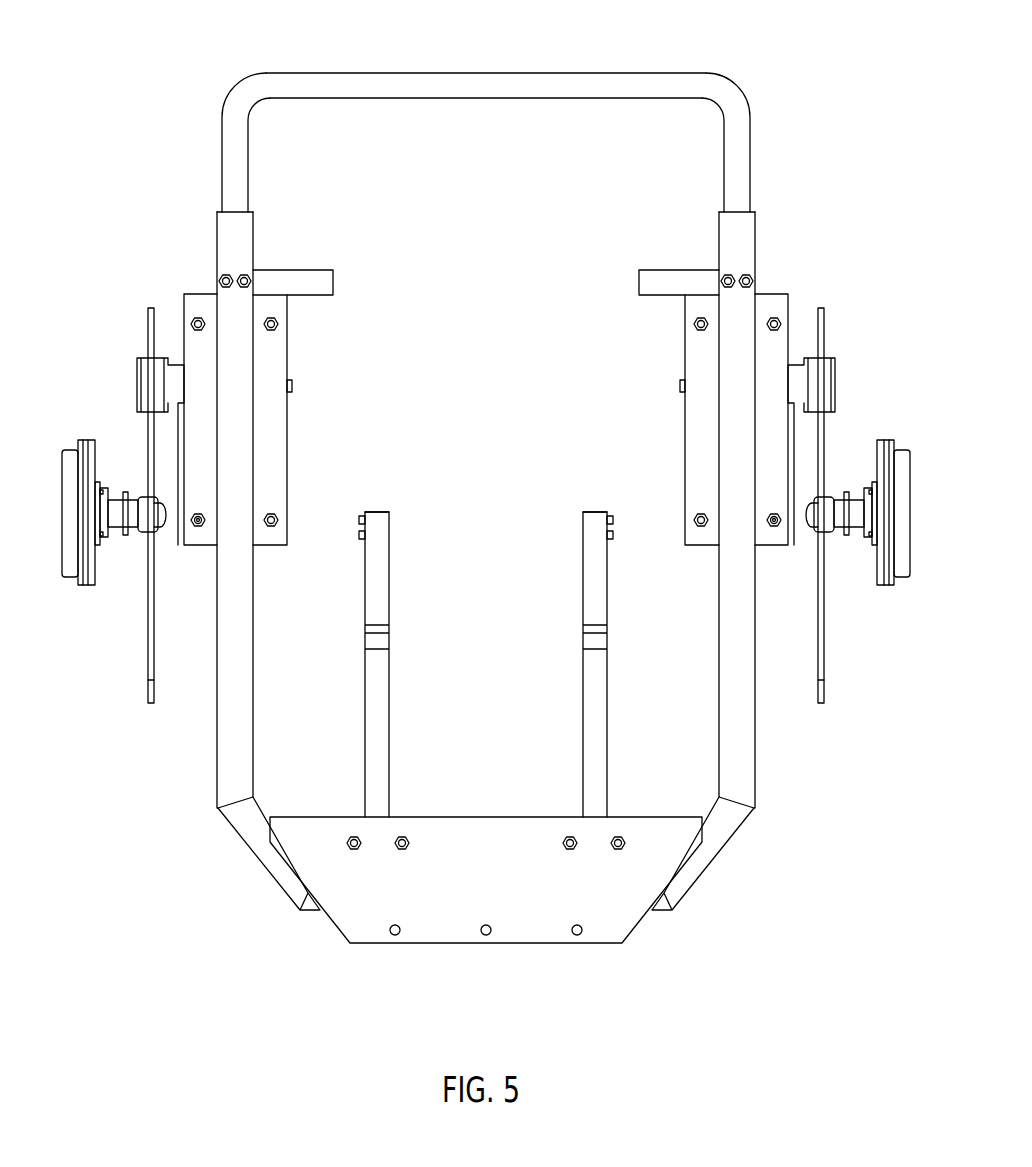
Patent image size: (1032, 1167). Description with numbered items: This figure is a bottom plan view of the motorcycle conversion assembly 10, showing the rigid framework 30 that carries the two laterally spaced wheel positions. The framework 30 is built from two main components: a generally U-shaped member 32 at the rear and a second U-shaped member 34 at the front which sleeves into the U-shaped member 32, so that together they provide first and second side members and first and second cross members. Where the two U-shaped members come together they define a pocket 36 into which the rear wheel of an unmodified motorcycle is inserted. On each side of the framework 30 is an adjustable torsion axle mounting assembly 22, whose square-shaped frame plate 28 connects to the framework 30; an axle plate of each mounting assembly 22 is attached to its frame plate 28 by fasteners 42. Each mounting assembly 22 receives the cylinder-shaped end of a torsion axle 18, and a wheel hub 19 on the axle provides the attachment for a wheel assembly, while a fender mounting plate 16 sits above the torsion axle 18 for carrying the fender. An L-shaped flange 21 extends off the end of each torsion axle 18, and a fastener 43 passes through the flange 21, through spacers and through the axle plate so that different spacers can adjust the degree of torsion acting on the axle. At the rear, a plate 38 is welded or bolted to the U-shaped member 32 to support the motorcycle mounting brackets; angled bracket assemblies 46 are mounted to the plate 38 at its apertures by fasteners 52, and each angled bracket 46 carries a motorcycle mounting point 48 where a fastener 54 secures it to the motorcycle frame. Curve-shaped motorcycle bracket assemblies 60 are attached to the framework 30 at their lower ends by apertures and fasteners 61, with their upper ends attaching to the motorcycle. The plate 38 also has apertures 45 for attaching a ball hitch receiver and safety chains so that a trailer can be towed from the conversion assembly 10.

The motorcycle conversion assembly 10 is at (178, 94).
The fender mounting plate 16 is at (147, 660).
The torsion axle 18 is at (125, 556).
The wheel hub 19 is at (90, 443).
The L-shaped flange 21 is at (162, 533).
The torsion axle mounting assembly 22 is at (156, 296).
The frame plate 28 is at (278, 445).
The framework 30 is at (232, 882).
The U-shaped member 32 is at (709, 852).
The U-shaped member 34 is at (655, 75).
The pocket 36 is at (470, 145).
The plate 38 is at (474, 859).
The fastener 42 is at (198, 316).
The fastener 43 is at (200, 528).
The aperture 45 is at (574, 935).
The angled bracket assembly 46 is at (389, 730).
The motorcycle mounting point 48 is at (385, 518).
The fastener 52 is at (402, 836).
The fastener 54 is at (360, 536).
The curve-shaped motorcycle bracket assembly 60 is at (300, 270).
The fastener 61 is at (746, 274).